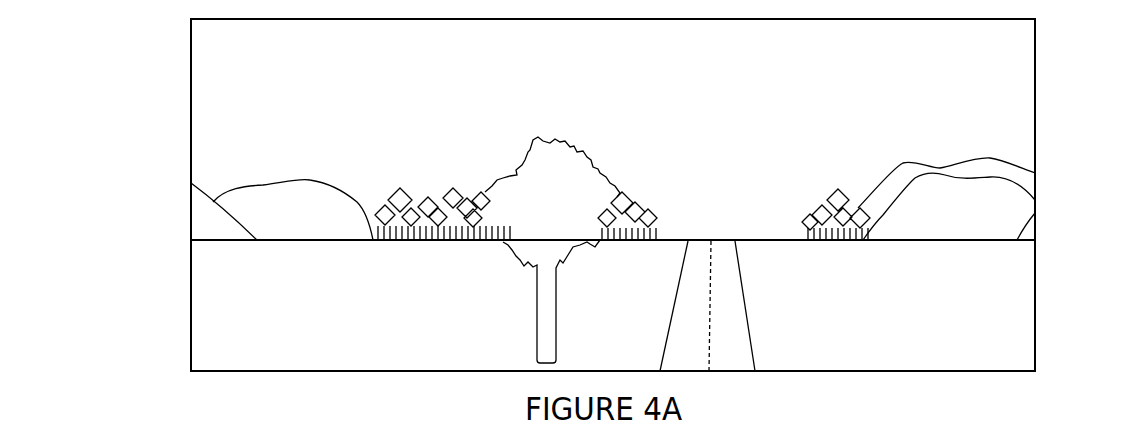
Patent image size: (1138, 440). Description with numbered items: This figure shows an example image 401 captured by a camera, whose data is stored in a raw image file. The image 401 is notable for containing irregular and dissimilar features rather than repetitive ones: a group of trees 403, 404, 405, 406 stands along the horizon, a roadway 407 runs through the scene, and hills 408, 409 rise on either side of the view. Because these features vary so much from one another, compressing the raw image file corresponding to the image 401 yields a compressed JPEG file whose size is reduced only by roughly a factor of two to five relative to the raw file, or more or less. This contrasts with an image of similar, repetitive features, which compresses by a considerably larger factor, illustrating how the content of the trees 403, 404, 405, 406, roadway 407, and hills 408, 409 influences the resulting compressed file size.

The image 401 is at (1032, 52).
The tree 403 is at (520, 173).
The tree 404 is at (633, 197).
The tree 405 is at (833, 197).
The tree 406 is at (395, 195).
The roadway 407 is at (710, 295).
The hill 408 is at (227, 230).
The hill 409 is at (987, 207).